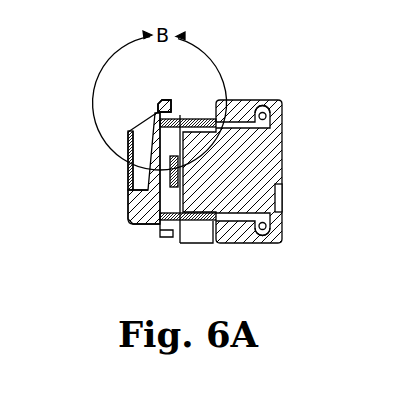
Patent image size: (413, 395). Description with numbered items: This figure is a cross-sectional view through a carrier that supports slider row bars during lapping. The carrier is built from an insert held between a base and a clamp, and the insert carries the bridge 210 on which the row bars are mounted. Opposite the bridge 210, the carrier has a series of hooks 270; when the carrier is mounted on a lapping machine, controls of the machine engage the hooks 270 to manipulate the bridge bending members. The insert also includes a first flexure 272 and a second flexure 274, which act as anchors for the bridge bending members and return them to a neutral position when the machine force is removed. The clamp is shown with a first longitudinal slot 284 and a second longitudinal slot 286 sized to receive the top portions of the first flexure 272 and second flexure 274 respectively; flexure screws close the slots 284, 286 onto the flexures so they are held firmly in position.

The bridge 210 is at (157, 101).
The hooks 270 is at (160, 236).
The first flexure 272 is at (214, 124).
The second flexure 274 is at (212, 218).
The first longitudinal slot 284 is at (252, 121).
The second longitudinal slot 286 is at (258, 212).